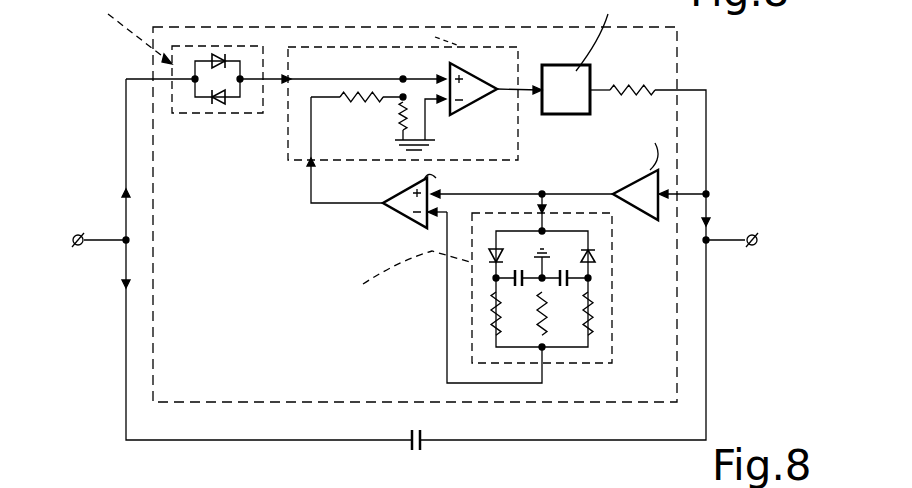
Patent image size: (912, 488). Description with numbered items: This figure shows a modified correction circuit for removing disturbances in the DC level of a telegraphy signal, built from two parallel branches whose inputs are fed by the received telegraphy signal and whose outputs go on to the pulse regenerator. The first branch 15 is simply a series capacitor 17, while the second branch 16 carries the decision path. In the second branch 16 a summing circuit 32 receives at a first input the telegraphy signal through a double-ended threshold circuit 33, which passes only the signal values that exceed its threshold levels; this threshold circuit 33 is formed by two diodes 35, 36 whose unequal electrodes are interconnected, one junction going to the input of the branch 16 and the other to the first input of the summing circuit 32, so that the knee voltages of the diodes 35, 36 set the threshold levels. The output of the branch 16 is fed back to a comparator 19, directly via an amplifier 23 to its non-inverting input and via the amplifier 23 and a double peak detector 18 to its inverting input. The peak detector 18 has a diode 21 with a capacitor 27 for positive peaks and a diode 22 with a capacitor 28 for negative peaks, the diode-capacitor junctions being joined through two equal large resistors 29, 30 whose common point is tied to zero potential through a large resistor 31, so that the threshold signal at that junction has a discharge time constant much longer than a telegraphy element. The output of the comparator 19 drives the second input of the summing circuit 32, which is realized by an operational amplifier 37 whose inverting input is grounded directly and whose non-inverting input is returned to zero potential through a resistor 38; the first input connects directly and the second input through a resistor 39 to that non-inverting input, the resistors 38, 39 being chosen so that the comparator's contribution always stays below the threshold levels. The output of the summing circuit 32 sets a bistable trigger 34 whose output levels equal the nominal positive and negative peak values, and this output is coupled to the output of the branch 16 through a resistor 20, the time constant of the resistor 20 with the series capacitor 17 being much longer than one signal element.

The first branch 15 is at (254, 428).
The second branch 16 is at (680, 60).
The series capacitor 17 is at (422, 428).
The peak detector 18 is at (613, 265).
The comparator 19 is at (400, 210).
The resistor 20 is at (631, 105).
The diode 21 is at (510, 250).
The diode 22 is at (584, 264).
The amplifier 23 is at (620, 186).
The capacitor 27 is at (497, 273).
The capacitor 28 is at (592, 272).
The resistor 29 is at (492, 312).
The resistor 30 is at (592, 313).
The resistor 31 is at (548, 308).
The summing circuit 32 is at (522, 69).
The double-ended threshold circuit 33 is at (197, 114).
The bistable trigger 34 is at (591, 78).
The diode 35 is at (221, 57).
The diode 36 is at (222, 103).
The operational amplifier 37 is at (472, 100).
The resistor 38 is at (400, 110).
The resistor 39 is at (352, 100).